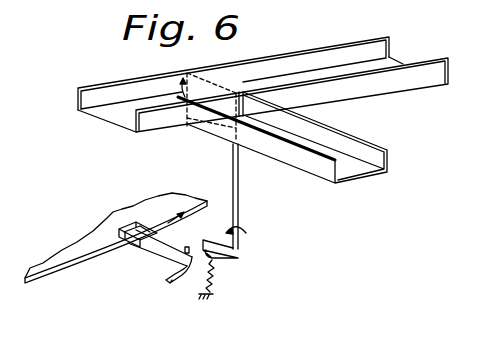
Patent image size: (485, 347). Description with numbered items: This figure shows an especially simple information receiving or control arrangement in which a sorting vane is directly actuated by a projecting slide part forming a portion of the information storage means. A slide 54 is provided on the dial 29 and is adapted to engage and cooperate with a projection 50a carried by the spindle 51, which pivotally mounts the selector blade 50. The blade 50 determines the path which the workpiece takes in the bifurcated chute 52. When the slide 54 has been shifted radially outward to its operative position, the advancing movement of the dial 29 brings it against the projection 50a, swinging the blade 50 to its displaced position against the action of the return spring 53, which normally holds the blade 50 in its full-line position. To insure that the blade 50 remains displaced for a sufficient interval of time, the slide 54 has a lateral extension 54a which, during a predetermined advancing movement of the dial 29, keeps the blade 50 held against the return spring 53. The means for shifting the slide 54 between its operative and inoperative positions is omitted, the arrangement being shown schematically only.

The dial 29 is at (88, 247).
The selector blade 50 is at (206, 78).
The projection 50a is at (240, 257).
The spindle 51 is at (239, 200).
The bifurcated chute 52 is at (325, 114).
The return spring 53 is at (217, 285).
The slide 54 is at (168, 247).
The lateral extension 54a is at (172, 283).